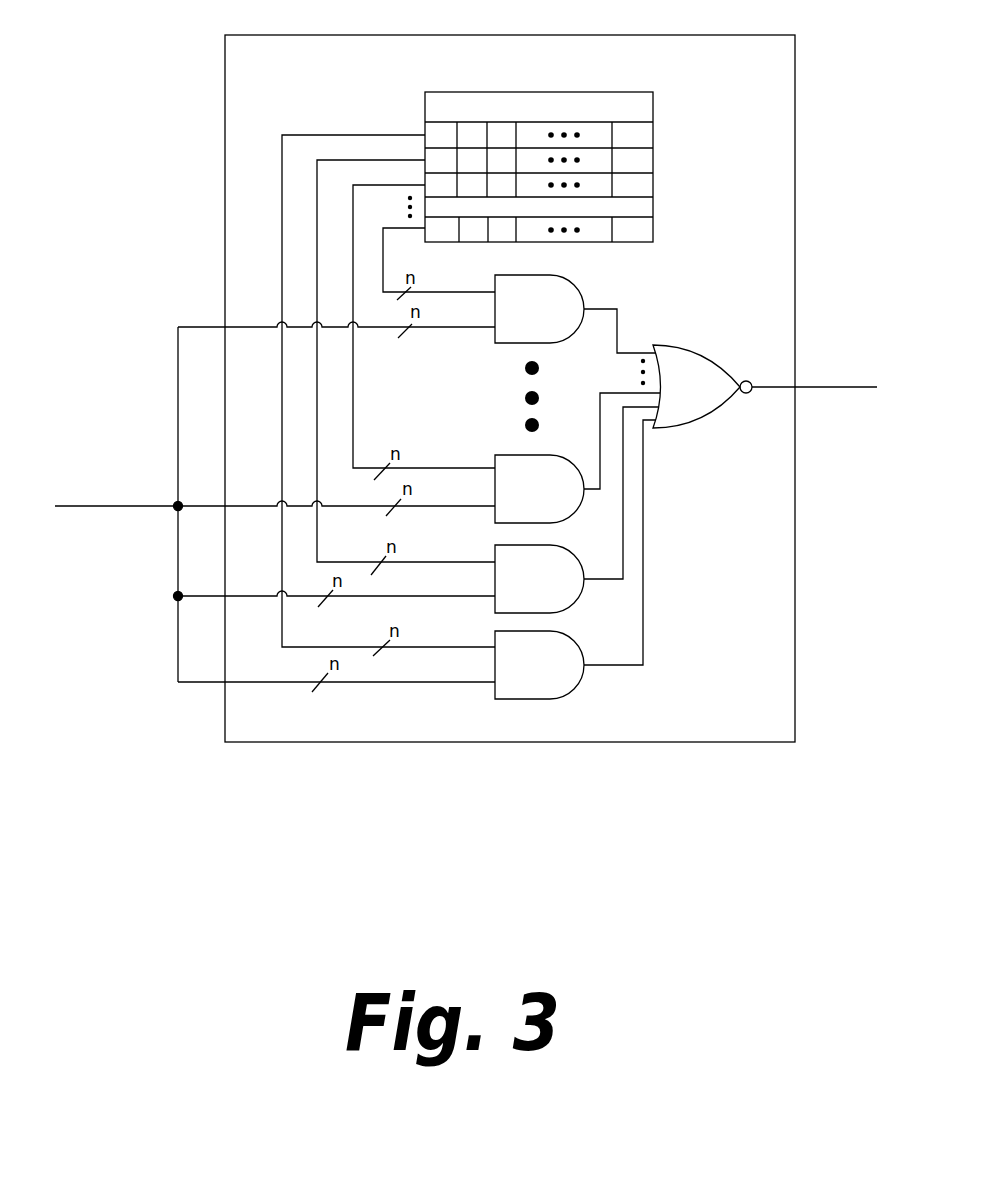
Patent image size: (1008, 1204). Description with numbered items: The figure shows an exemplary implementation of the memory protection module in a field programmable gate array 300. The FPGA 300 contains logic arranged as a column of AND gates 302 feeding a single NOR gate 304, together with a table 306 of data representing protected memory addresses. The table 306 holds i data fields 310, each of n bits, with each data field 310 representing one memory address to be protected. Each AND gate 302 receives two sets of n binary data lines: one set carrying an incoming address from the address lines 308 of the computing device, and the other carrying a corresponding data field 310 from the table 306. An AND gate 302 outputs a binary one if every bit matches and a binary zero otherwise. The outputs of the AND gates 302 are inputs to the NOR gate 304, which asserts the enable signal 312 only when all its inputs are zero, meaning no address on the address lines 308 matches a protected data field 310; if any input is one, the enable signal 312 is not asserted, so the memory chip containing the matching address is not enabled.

The field programmable gate array 300 is at (510, 388).
The AND gate 302 is at (577, 487).
The NOR gate 304 is at (696, 386).
The table 306 is at (536, 162).
The address lines 308 is at (105, 508).
The data field 310 is at (653, 133).
The enable signal 312 is at (810, 389).